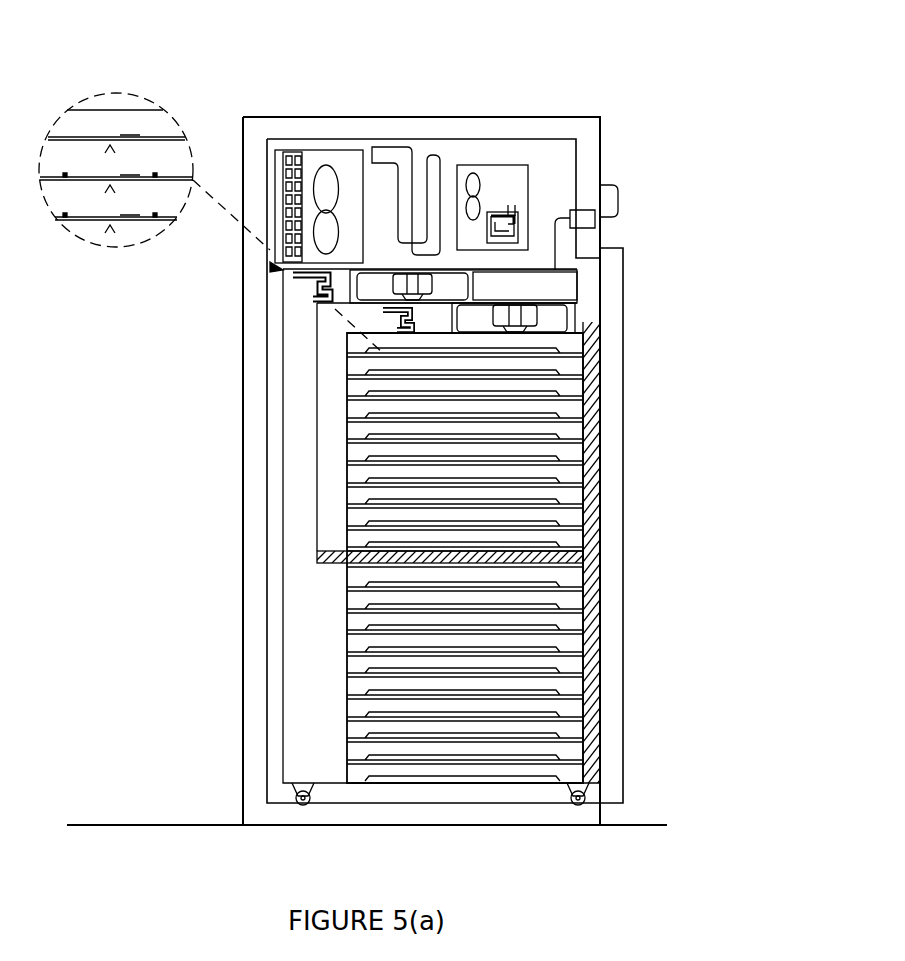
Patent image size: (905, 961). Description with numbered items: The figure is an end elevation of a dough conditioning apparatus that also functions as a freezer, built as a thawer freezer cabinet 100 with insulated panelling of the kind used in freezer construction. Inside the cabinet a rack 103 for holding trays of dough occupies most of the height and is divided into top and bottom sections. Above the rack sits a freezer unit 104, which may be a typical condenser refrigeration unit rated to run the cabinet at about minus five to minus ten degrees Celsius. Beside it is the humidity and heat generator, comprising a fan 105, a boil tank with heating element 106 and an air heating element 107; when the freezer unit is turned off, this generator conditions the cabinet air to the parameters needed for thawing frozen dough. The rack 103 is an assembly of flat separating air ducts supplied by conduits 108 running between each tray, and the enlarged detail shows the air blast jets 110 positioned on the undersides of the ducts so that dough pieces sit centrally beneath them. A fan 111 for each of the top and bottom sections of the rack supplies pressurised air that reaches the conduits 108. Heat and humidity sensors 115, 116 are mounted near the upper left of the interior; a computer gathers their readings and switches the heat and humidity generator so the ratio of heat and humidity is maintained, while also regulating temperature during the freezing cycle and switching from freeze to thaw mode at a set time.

The thawer freezer cabinet 100 is at (601, 127).
The rack 103 is at (593, 508).
The freezer unit 104 is at (347, 162).
The fan 105 is at (473, 173).
The boil tank with heating element 106 is at (497, 210).
The air heating element 107 is at (388, 147).
The conduits 108 is at (313, 640).
The air blast jets 110 is at (147, 100).
The fan 111 is at (452, 284).
The heat and humidity sensor 115 is at (276, 278).
The heat and humidity sensor 116 is at (270, 267).